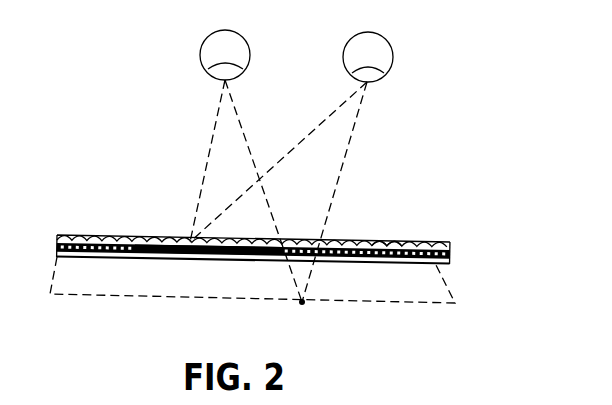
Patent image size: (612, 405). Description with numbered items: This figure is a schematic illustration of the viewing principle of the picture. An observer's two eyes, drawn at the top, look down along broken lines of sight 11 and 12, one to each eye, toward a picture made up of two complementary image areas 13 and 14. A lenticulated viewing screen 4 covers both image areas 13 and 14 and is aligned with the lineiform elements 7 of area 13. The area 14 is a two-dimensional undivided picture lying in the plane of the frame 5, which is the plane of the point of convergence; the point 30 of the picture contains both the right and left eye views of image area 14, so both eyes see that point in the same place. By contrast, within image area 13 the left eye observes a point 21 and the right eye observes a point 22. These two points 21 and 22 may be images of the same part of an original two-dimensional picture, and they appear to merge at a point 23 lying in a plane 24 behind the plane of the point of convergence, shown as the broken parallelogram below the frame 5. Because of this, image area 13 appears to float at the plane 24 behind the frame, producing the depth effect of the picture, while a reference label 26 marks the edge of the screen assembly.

The lenticulated viewing screen 4 is at (72, 237).
The frame 5 is at (450, 263).
The lineiform elements 7 is at (397, 250).
The line of sight to the left eye 11 is at (344, 165).
The line of sight to the right eye 12 is at (247, 140).
The image area 13 is at (385, 258).
The image area 14 is at (148, 247).
The point of the image 21 is at (320, 253).
The point of the image 22 is at (280, 250).
The point of apparent merger 23 is at (302, 302).
The plane 24 is at (122, 297).
The panel edge 26 is at (448, 241).
The point of the picture 30 is at (190, 242).